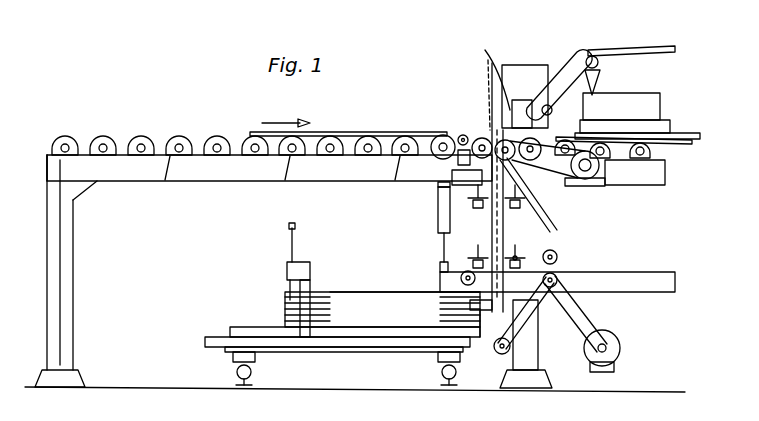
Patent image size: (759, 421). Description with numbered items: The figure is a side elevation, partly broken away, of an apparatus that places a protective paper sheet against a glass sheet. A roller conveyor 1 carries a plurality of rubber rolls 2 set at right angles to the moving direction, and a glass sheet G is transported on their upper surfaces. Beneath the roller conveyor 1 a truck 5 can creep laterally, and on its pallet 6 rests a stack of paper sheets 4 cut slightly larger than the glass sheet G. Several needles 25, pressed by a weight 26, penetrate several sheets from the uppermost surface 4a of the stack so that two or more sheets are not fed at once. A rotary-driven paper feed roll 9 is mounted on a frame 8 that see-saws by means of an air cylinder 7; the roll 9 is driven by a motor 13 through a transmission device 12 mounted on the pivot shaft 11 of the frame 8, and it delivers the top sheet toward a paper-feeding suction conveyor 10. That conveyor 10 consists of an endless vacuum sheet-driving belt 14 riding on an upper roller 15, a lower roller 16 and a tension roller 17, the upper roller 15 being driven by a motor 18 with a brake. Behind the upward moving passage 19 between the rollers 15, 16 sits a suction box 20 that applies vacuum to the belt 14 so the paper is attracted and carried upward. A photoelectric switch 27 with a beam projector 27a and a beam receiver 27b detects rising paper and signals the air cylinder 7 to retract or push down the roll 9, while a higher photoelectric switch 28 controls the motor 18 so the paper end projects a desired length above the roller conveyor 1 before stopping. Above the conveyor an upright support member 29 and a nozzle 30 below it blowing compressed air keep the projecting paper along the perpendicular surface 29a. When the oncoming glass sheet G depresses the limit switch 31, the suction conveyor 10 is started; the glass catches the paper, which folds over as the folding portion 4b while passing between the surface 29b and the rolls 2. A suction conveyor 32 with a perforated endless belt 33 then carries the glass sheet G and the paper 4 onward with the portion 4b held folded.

The roller conveyor 1 is at (355, 176).
The rubber rolls 2 is at (352, 147).
The glass sheet G is at (391, 133).
The paper sheets 4 is at (348, 292).
The uppermost surface of the stack 4a is at (385, 283).
The folding portion of the paper 4b is at (488, 110).
The truck 5 is at (392, 348).
The pallet 6 is at (205, 340).
The air cylinder 7 is at (438, 224).
The frame 8 is at (640, 292).
The paper feed roll 9 is at (455, 270).
The paper-feeding suction conveyor 10 is at (496, 355).
The pivot shaft 11 is at (578, 300).
The transmission device 12 is at (577, 345).
The motor 13 is at (621, 345).
The endless vacuum sheet-driving belt 14 is at (595, 270).
The upper roller 15 is at (470, 170).
The lower roller 16 is at (500, 356).
The tension roller 17 is at (558, 257).
The motor with a brake 18 is at (600, 182).
The upward moving passage 19 is at (492, 203).
The suction box 20 is at (562, 170).
The needles 25 is at (287, 260).
The weight 26 is at (289, 227).
The photoelectric switch 27 is at (470, 232).
The beam projector 27a is at (535, 252).
The beam receiver 27b is at (478, 258).
The photoelectric switch 28 is at (455, 198).
The upright support member 29 is at (520, 100).
The perpendicular surface 29a is at (508, 108).
The surface of the limiting member 29b is at (538, 108).
The nozzle 30 is at (478, 138).
The limit switch 31 is at (458, 132).
The suction conveyor 32 is at (640, 51).
The perforated endless belt 33 is at (592, 134).